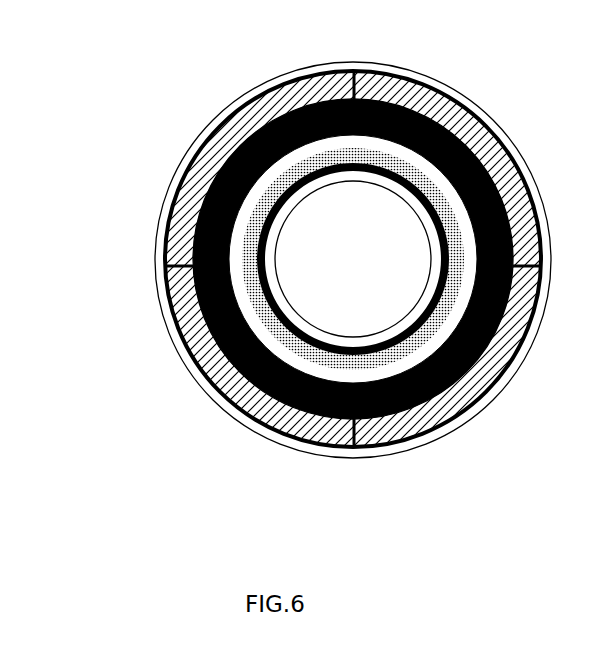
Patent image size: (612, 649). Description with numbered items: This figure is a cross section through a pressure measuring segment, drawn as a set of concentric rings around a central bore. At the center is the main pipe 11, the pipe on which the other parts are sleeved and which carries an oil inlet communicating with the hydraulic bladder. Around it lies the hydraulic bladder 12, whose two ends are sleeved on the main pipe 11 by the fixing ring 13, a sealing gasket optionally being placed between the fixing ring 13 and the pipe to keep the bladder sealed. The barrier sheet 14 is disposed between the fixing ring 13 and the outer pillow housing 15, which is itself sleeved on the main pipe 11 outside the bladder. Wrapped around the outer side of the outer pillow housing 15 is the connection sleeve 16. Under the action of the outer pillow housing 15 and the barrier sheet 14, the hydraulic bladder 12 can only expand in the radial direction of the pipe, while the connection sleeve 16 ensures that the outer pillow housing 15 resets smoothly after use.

The main pipe 11 is at (258, 322).
The hydraulic bladder 12 is at (237, 232).
The fixing ring 13 is at (313, 363).
The barrier sheet 14 is at (322, 445).
The outer pillow housing 15 is at (238, 132).
The connection sleeve 16 is at (286, 72).